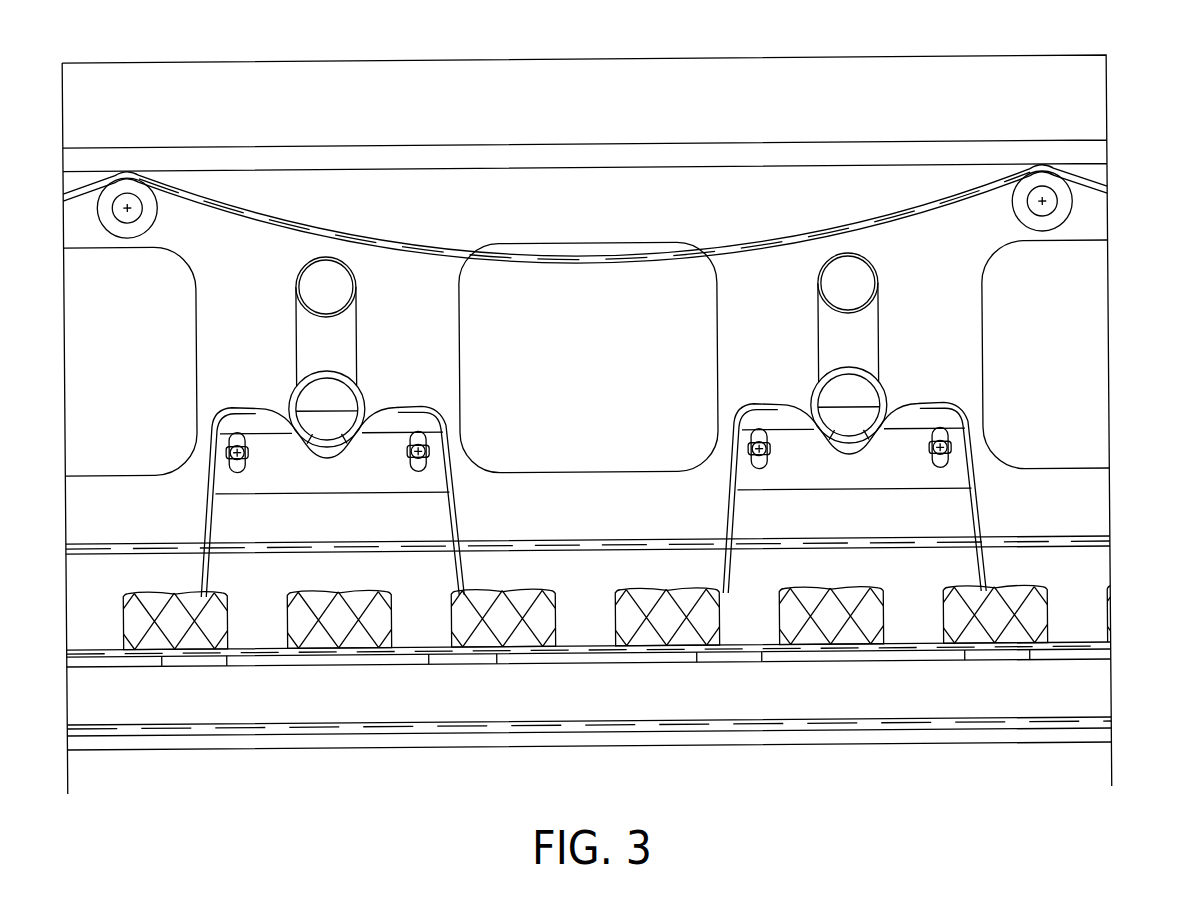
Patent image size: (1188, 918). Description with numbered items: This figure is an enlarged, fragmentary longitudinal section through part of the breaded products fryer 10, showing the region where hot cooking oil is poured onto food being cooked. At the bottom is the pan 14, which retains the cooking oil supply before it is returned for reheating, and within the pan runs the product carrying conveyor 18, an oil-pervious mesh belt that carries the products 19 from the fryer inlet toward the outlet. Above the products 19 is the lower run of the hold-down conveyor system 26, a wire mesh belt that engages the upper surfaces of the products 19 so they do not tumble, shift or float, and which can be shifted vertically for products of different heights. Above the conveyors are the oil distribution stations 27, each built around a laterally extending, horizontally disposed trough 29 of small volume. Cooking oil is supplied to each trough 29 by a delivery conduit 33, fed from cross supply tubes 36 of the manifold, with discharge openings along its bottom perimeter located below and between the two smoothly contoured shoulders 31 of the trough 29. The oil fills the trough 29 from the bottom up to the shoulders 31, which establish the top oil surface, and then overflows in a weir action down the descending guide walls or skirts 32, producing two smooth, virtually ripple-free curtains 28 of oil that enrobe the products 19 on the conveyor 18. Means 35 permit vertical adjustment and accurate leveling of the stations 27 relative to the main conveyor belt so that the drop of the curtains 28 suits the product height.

The breaded products fryer 10 is at (826, 56).
The pan 14 is at (655, 746).
The product carrying conveyor 18 is at (254, 645).
The products 19 is at (618, 591).
The hold-down conveyor system 26 is at (792, 236).
The oil distribution stations 27 is at (308, 272).
The curtains 28 is at (202, 519).
The trough 29 is at (790, 408).
The shoulders 31 is at (422, 404).
The guide walls or skirts 32 is at (212, 490).
The delivery conduit 33 is at (872, 400).
The means permitting vertical adjust 35 is at (238, 432).
The cross supply tubes 36 is at (868, 296).